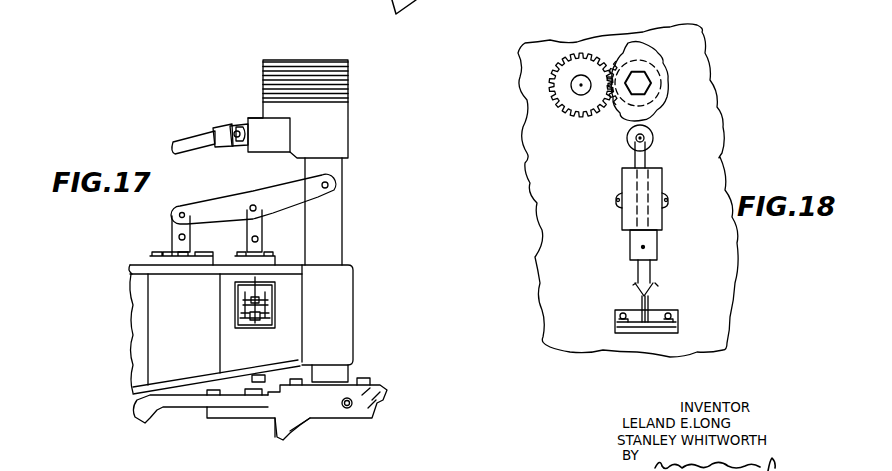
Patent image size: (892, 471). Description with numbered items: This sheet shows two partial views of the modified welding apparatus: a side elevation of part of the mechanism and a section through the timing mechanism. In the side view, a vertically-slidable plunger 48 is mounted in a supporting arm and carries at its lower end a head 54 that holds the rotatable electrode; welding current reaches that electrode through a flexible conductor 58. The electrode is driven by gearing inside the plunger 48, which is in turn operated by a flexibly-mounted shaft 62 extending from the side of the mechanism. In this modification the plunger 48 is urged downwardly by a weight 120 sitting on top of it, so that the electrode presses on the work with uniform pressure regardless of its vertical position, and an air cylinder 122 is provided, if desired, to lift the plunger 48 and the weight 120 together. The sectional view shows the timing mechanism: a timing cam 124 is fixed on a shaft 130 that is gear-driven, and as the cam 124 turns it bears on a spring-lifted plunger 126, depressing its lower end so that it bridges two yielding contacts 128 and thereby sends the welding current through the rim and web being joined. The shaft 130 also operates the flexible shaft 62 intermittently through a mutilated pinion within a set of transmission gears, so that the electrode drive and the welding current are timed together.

In FIG. 17, the plunger 48 is at (327, 231).
In FIG. 17, the head 54 is at (327, 400).
In FIG. 17, the flexible conductor 58 is at (160, 407).
In FIG. 17, the flexibly-mounted shaft 62 is at (188, 147).
In FIG. 17, the weight 120 is at (322, 88).
In FIG. 17, the air cylinder 122 is at (165, 319).
In FIG. 18, the timing cam 124 is at (657, 63).
In FIG. 18, the spring-lifted plunger 126 is at (645, 157).
In FIG. 18, the yielding contacts 128 is at (645, 308).
In FIG. 18, the shaft 130 is at (635, 82).